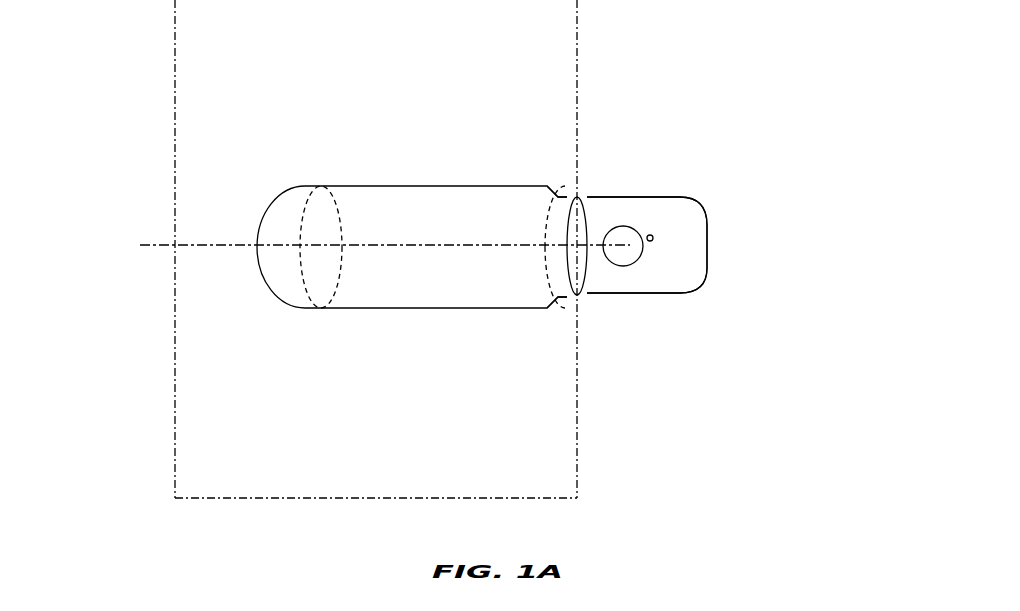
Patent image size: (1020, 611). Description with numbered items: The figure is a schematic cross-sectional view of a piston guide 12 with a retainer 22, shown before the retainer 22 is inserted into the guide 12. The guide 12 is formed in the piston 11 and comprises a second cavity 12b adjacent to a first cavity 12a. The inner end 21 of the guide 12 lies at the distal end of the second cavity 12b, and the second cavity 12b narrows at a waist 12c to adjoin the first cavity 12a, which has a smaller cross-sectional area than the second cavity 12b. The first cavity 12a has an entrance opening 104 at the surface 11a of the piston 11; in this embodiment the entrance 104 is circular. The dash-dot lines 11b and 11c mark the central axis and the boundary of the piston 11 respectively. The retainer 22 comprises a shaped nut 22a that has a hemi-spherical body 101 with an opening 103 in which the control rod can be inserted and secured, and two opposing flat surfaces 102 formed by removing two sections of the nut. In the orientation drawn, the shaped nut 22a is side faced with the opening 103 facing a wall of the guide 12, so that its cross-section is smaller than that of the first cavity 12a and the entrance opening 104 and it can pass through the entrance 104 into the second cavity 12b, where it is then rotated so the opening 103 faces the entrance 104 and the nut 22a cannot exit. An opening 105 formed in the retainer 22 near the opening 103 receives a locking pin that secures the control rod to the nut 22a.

The piston 11 is at (552, 445).
The surface of the piston 11a is at (579, 50).
The central axis 11b is at (242, 248).
The end plane 11c is at (173, 84).
The piston guide 12 is at (428, 186).
The first cavity 12a is at (569, 299).
The second cavity 12b is at (352, 247).
The waist 12c is at (555, 186).
The inner end of the guide 21 is at (278, 293).
The retainer 22 is at (668, 160).
The shaped nut 22a is at (673, 193).
The hemi-spherical body 101 is at (704, 271).
The opposing flat surfaces 102 is at (620, 294).
The opening 103 is at (632, 262).
The entrance opening 104 is at (581, 195).
The opening 105 is at (655, 239).